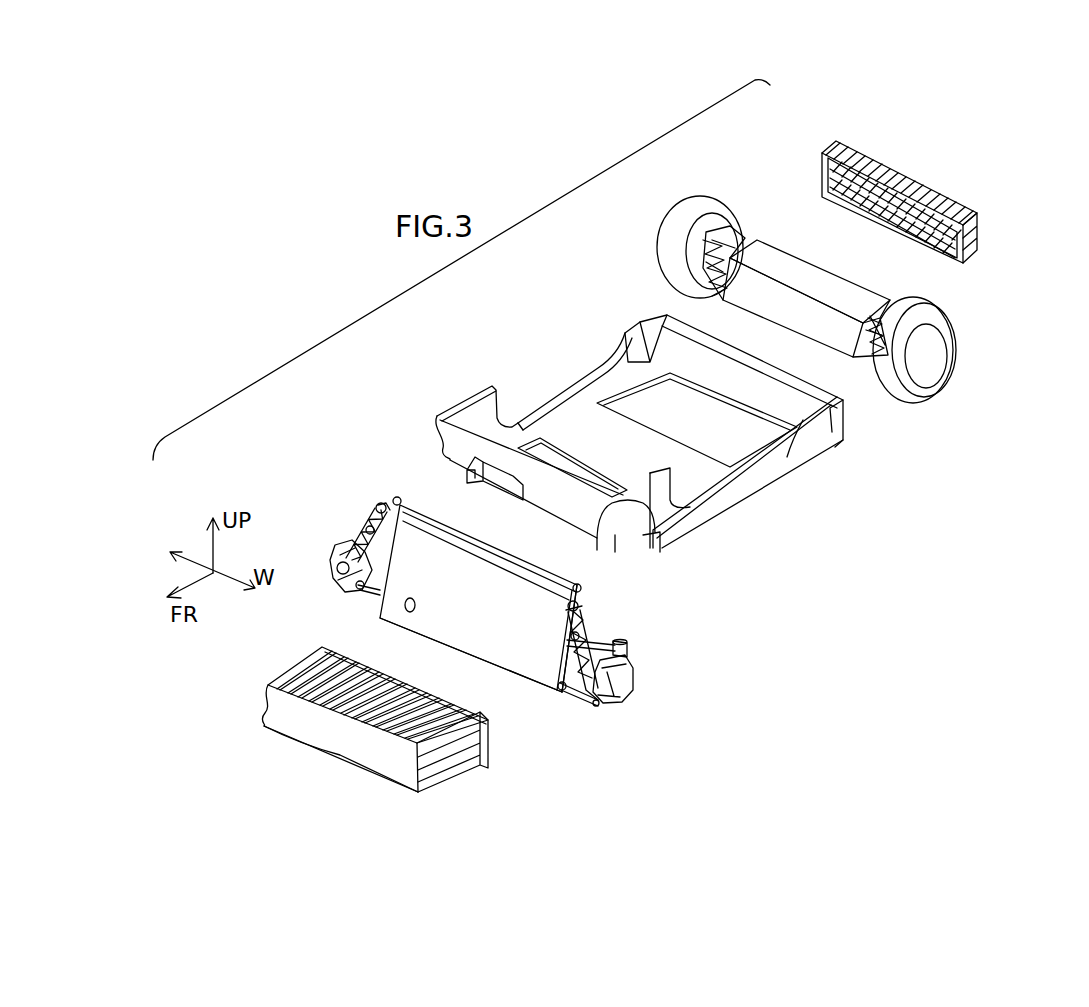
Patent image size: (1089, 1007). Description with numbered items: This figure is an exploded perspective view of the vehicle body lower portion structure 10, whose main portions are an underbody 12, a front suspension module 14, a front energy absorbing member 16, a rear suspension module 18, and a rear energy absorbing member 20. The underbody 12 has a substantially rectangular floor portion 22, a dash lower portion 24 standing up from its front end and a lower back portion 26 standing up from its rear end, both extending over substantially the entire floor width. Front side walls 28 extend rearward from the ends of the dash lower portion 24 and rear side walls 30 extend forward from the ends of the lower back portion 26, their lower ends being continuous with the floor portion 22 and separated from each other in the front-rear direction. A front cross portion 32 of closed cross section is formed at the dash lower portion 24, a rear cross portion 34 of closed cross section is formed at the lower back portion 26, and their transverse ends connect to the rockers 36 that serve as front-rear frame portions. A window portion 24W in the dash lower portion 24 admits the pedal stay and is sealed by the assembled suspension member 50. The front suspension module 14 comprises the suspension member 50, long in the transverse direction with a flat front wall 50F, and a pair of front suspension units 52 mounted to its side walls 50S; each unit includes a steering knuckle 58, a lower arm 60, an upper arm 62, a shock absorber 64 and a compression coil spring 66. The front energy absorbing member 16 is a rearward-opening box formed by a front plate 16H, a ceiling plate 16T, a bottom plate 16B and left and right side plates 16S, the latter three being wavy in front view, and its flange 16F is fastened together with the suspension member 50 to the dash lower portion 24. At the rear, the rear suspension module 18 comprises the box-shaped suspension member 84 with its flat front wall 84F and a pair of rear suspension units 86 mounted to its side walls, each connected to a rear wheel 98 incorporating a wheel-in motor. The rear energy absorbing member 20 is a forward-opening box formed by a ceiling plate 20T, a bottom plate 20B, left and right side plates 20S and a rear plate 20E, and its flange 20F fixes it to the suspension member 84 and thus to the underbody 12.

The vehicle body lower portion structure 10 is at (553, 251).
The underbody 12 is at (627, 426).
The front suspension module 14 is at (493, 620).
The front energy absorbing member 16 is at (356, 742).
The ceiling plate 16T is at (315, 677).
The flange 16F is at (400, 680).
The side plates 16S is at (258, 718).
The front plate 16H is at (303, 722).
The bottom plate 16B is at (333, 760).
The rear suspension module 18 is at (909, 412).
The rear energy absorbing member 20 is at (903, 211).
The side plates 20S is at (820, 180).
The rear plate 20E is at (885, 178).
The ceiling plate 20T is at (920, 190).
The flange 20F is at (855, 205).
The bottom plate 20B is at (910, 225).
The floor portion 22 is at (578, 410).
The dash lower portion 24 is at (582, 522).
The window portion 24W is at (465, 465).
The lower back portion 26 is at (697, 420).
The front side walls 28 is at (487, 405).
The rear side walls 30 is at (628, 335).
The front cross portion 32 is at (588, 545).
The rear cross portion 34 is at (730, 388).
The rockers 36 is at (605, 390).
The suspension member 50 is at (480, 623).
The front wall 50F is at (460, 565).
The side walls 50S is at (558, 675).
The front suspension units 52 is at (493, 620).
The steering knuckle 58 is at (338, 560).
The lower arm 60 is at (358, 585).
The upper arm 62 is at (640, 650).
The shock absorber 64 is at (355, 540).
The compression coil spring 66 is at (365, 520).
The suspension member 84 is at (806, 276).
The front wall 84F is at (755, 283).
The rear suspension units 86 is at (751, 207).
The rear wheel 98 is at (678, 210).